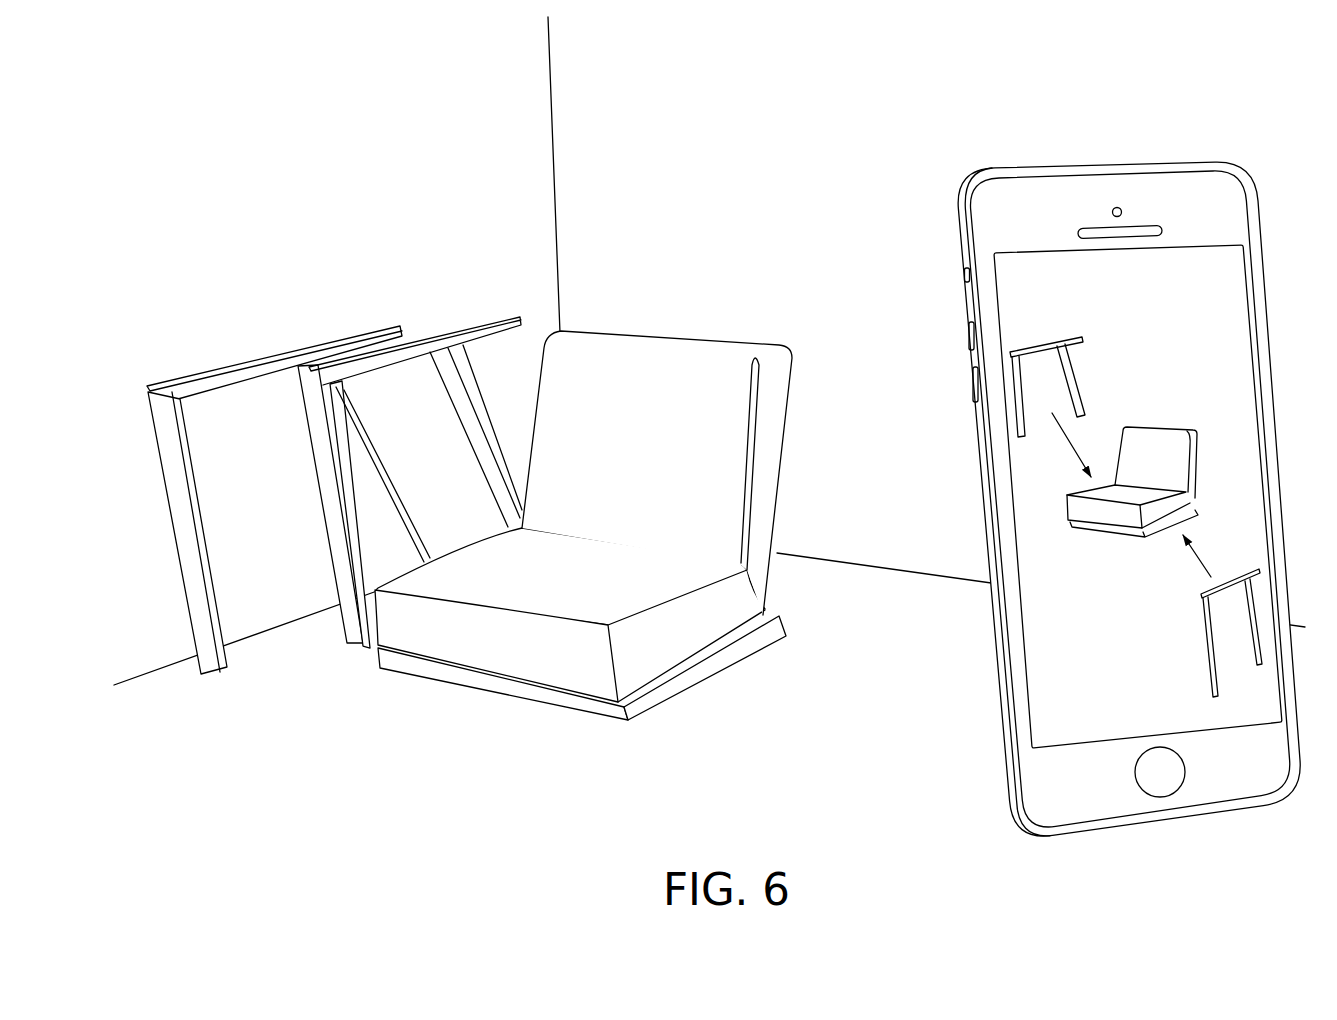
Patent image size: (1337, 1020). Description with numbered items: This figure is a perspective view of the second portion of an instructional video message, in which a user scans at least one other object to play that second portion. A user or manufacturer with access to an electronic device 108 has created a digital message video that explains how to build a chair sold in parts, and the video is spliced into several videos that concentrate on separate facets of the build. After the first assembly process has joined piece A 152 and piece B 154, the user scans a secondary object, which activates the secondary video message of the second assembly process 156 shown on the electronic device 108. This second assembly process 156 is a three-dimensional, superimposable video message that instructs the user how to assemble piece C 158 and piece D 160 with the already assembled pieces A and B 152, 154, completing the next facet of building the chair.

The electronic device 108 is at (1097, 463).
The piece A 152 is at (729, 378).
The piece B 154 is at (647, 630).
The second assembly process 156 is at (1023, 288).
The piece C 158 is at (468, 310).
The piece D 160 is at (302, 334).